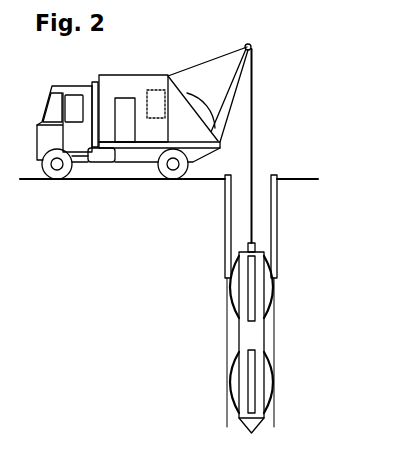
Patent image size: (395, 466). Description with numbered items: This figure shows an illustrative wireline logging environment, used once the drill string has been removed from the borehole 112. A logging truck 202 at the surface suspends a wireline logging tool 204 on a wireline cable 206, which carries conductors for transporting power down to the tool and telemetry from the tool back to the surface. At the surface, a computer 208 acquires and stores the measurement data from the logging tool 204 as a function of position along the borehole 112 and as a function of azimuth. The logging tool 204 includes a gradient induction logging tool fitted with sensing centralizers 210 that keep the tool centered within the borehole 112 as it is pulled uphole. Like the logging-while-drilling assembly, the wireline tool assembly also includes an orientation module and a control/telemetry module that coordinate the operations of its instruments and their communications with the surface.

The logging truck 202 is at (110, 75).
The computer 208 is at (159, 90).
The wireline cable 206 is at (253, 174).
The borehole 112 is at (228, 287).
The sensing centralizers 210 is at (237, 360).
The wireline logging tool 204 is at (247, 427).